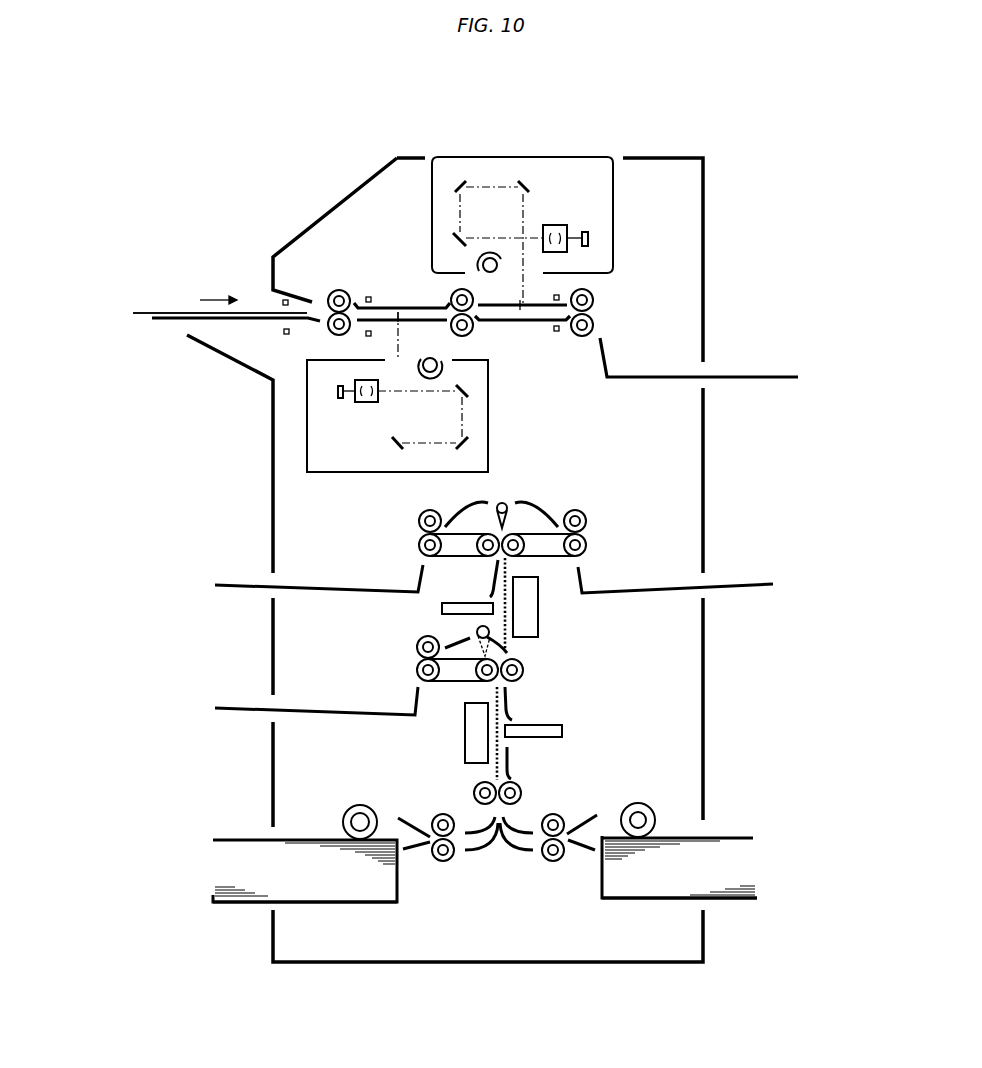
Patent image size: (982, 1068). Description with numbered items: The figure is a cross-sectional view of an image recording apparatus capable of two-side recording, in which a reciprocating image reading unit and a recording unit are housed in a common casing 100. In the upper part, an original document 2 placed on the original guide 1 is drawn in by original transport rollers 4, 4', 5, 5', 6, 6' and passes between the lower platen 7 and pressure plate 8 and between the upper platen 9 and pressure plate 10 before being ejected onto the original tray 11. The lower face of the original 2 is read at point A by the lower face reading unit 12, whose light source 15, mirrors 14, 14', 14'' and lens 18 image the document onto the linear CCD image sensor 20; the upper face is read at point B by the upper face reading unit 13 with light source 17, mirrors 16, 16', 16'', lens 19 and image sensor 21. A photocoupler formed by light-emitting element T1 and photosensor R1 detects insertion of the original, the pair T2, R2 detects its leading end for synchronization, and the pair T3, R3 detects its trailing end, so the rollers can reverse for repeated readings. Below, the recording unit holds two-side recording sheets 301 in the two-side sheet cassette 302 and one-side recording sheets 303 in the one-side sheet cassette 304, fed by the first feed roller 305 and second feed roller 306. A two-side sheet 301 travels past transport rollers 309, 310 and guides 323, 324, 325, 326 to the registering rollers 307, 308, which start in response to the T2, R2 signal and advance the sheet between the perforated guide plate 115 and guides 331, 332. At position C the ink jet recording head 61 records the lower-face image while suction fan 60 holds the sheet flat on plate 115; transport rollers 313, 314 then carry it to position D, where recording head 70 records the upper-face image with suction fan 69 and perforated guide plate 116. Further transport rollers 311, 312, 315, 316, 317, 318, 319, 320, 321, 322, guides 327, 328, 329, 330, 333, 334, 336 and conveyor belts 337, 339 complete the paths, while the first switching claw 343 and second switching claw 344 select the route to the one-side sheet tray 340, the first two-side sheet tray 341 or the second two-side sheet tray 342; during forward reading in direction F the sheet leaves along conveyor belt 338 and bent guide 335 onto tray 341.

The original guide 1 is at (172, 322).
The original document 2 is at (140, 313).
The original transport roller 4 is at (324, 331).
The original transport roller 4' is at (335, 281).
The original transport roller 5 is at (472, 332).
The original transport roller 5' is at (443, 291).
The original transport roller 6 is at (604, 324).
The original transport roller 6' is at (603, 299).
The lower platen 7 is at (418, 323).
The pressure plate 8 is at (415, 304).
The upper platen 9 is at (537, 304).
The pressure plate 10 is at (512, 324).
The original tray 11 is at (748, 375).
The lower face reading unit 12 is at (489, 410).
The upper face reading unit 13 is at (553, 156).
The mirror 14 is at (388, 453).
The mirror 14' is at (464, 434).
The mirror 14'' is at (492, 402).
The light source 15 is at (434, 357).
The mirror 16 is at (518, 213).
The mirror 16' is at (477, 174).
The mirror 16'' is at (486, 251).
The light source 17 is at (486, 276).
The lens 18 is at (368, 404).
The lens 19 is at (555, 224).
The linear CCD image sensor 20 is at (340, 400).
The linear CCD image sensor 21 is at (585, 231).
The suction fan 60 is at (465, 733).
The ink jet recording head 61 is at (562, 731).
The suction fan 69 is at (538, 613).
The ink jet recording head 70 is at (459, 592).
The casing 100 is at (702, 676).
The perforated guide plate 115 is at (493, 688).
The perforated guide plate 116 is at (508, 566).
The two-side recording sheet 301 is at (243, 838).
The two-side sheet cassette 302 is at (372, 903).
The one-side recording sheet 303 is at (733, 838).
The one-side sheet cassette 304 is at (655, 899).
The first feed roller 305 is at (355, 804).
The second feed roller 306 is at (650, 803).
The registering roller 307 is at (478, 784).
The registering roller 308 is at (519, 785).
The transport roller 309 is at (436, 814).
The transport roller 310 is at (445, 862).
The transport roller 311 is at (563, 814).
The transport roller 312 is at (553, 862).
The transport roller 313 is at (497, 663).
The transport roller 314 is at (524, 670).
The transport roller 315 is at (417, 670).
The transport roller 316 is at (417, 648).
The transport roller 317 is at (515, 533).
The transport roller 318 is at (487, 533).
The transport roller 319 is at (587, 544).
The transport roller 320 is at (587, 517).
The transport roller 321 is at (419, 544).
The transport roller 322 is at (419, 519).
The transport guide 323 is at (404, 815).
The transport guide 324 is at (405, 850).
The transport guide 325 is at (480, 820).
The transport guide 326 is at (476, 851).
The transport guide 327 is at (595, 812).
The transport guide 328 is at (582, 851).
The transport guide 329 is at (522, 822).
The transport guide 330 is at (516, 851).
The transport guide 331 is at (511, 758).
The transport guide 332 is at (510, 692).
The transport guide 333 is at (457, 639).
The transport guide 334 is at (496, 568).
The bent guide 335 is at (550, 507).
The transport guide 336 is at (460, 513).
The conveyor belt 337 is at (435, 682).
The conveyor belt 338 is at (563, 557).
The conveyor belt 339 is at (437, 557).
The one-side sheet tray 340 is at (240, 708).
The first two-side sheet tray 341 is at (747, 582).
The second two-side sheet tray 342 is at (240, 585).
The first switching claw 343 is at (467, 622).
The second switching claw 344 is at (503, 497).
The reading point A is at (398, 318).
The reading point B is at (520, 305).
The recording position C is at (520, 726).
The recording position D is at (490, 604).
The forward direction F is at (225, 300).
The light-emitting element T1 is at (283, 302).
The light-emitting element T2 is at (368, 297).
The light-emitting element T3 is at (560, 296).
The photosensor R1 is at (283, 334).
The photosensor R2 is at (365, 335).
The photosensor R3 is at (556, 332).